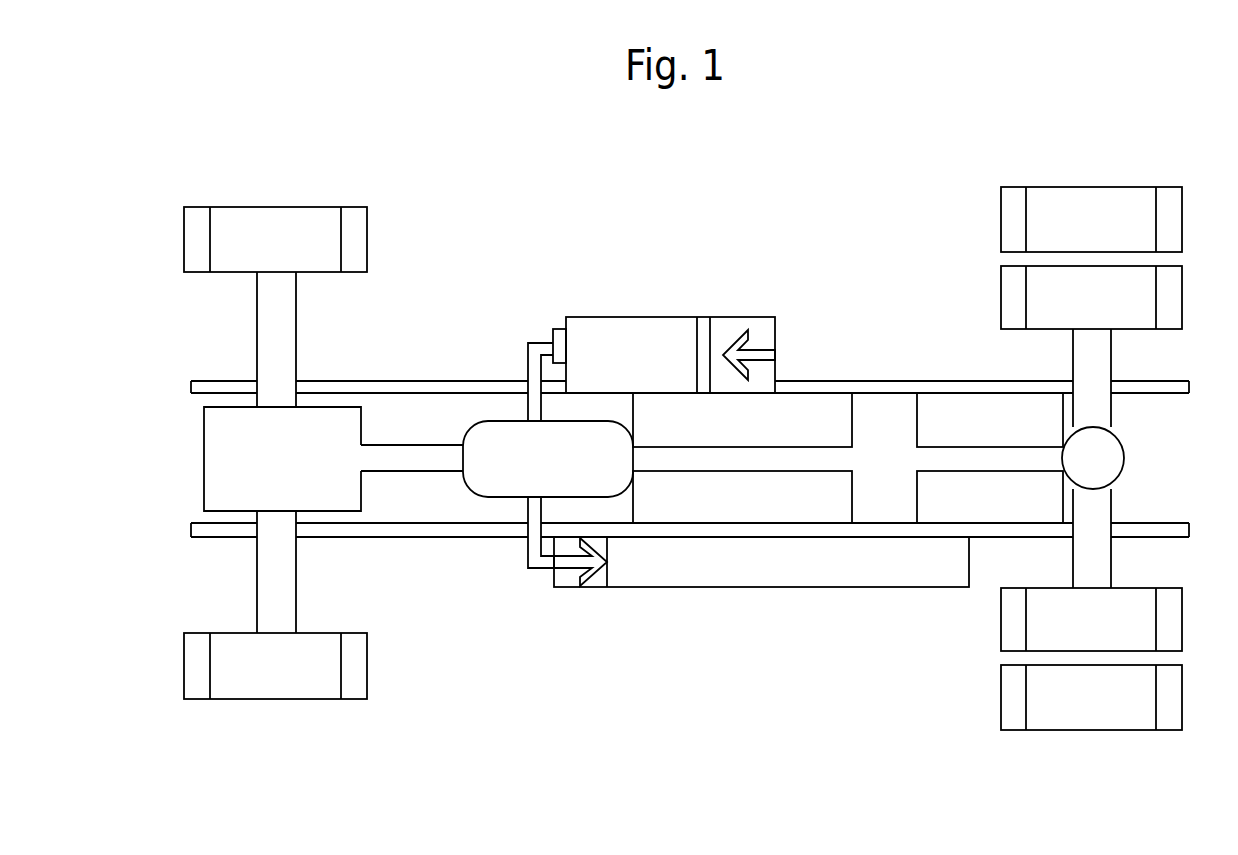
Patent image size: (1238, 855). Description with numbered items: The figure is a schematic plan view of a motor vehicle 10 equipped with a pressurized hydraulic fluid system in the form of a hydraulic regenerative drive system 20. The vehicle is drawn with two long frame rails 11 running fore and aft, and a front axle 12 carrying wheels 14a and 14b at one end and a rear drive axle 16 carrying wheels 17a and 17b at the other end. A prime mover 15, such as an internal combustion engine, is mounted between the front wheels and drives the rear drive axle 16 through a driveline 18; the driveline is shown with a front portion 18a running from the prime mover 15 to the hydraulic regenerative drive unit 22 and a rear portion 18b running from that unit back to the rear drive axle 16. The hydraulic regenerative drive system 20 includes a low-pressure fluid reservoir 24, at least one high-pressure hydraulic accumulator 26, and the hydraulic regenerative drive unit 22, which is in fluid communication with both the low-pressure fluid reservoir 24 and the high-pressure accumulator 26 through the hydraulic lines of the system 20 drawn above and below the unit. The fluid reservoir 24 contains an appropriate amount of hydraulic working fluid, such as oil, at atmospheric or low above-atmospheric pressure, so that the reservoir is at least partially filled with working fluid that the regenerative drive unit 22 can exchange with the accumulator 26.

The motor vehicle 10 is at (626, 746).
The frame rails 11 is at (375, 381).
The front axle 12 is at (245, 594).
The wheel 14a is at (229, 700).
The wheel 14b is at (229, 207).
The prime mover 15 is at (204, 467).
The rear drive axle 16 is at (1124, 503).
The wheel 17a is at (1112, 730).
The wheel 17b is at (1134, 187).
The driveline 18 is at (816, 435).
The drive shaft front portion 18a is at (385, 472).
The drive shaft rear portion 18b is at (792, 472).
The hydraulic regenerative drive system 20 is at (511, 357).
The hydraulic regenerative drive unit 22 is at (483, 511).
The low-pressure fluid reservoir 24 is at (668, 317).
The high-pressure hydraulic accumulator 26 is at (720, 588).